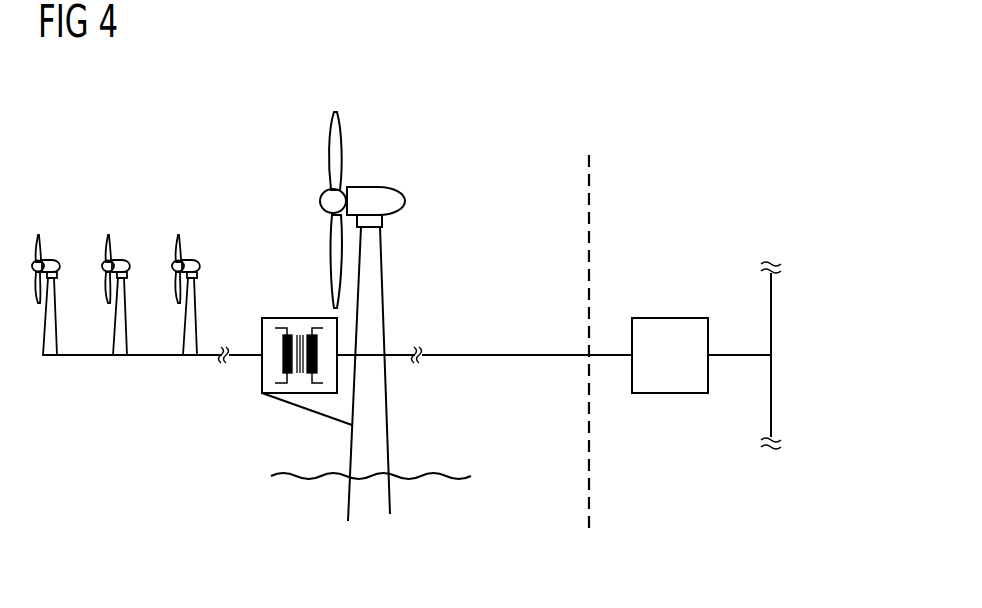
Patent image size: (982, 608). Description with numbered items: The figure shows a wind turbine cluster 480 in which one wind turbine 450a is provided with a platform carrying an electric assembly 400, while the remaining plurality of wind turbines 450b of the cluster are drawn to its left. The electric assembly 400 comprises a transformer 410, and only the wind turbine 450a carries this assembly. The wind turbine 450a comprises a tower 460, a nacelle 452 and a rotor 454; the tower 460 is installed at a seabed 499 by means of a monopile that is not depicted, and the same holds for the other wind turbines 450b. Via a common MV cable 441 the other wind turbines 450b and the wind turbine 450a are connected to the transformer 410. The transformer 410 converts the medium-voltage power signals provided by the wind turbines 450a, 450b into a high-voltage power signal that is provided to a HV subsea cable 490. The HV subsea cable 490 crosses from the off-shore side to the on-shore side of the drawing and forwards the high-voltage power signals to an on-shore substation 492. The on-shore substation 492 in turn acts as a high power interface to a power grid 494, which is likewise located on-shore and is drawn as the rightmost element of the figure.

The electric assembly 400 is at (283, 324).
The transformer 410 is at (300, 318).
The common MV cable 441 is at (76, 357).
The wind turbine 450a is at (371, 298).
The wind turbines 450b is at (58, 232).
The nacelle 452 is at (405, 202).
The rotor 454 is at (333, 153).
The tower 460 is at (355, 456).
The wind turbine cluster 480 is at (718, 79).
The HV subsea cable 490 is at (478, 352).
The on-shore substation 492 is at (668, 316).
The power grid 494 is at (772, 312).
The seabed 499 is at (430, 488).